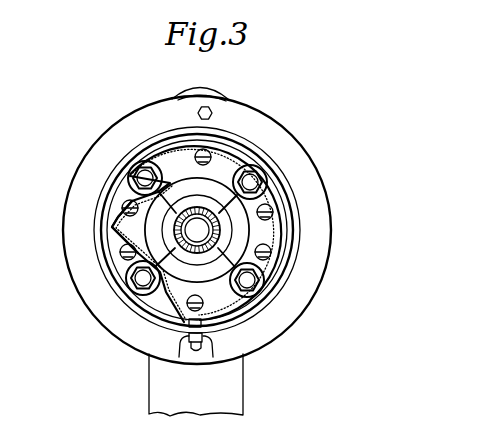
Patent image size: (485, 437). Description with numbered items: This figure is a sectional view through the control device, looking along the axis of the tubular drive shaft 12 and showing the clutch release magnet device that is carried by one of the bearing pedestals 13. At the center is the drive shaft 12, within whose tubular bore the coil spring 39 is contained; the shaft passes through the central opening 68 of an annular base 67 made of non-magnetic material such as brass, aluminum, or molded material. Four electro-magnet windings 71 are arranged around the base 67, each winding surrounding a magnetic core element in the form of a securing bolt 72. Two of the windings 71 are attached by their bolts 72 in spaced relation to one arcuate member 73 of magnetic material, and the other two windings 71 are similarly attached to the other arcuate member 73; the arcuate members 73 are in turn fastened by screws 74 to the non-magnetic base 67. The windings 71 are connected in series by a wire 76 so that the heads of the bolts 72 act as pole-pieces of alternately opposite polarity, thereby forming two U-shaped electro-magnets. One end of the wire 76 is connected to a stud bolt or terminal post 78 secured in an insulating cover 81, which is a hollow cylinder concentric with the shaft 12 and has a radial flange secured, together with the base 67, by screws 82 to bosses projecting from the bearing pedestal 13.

The tubular drive shaft 12 is at (162, 273).
The bearing pedestal 13 is at (205, 92).
The coil spring 39 is at (197, 230).
The annular base 67 is at (118, 213).
The central opening 68 is at (225, 230).
The electro-magnet winding 71 is at (174, 188).
The securing bolt 72 is at (140, 177).
The arcuate member 73 is at (171, 172).
The screw 74 is at (202, 163).
The wire 76 is at (160, 297).
The terminal post 78 is at (204, 344).
The insulating cover 81 is at (298, 234).
The screw 82 is at (212, 113).